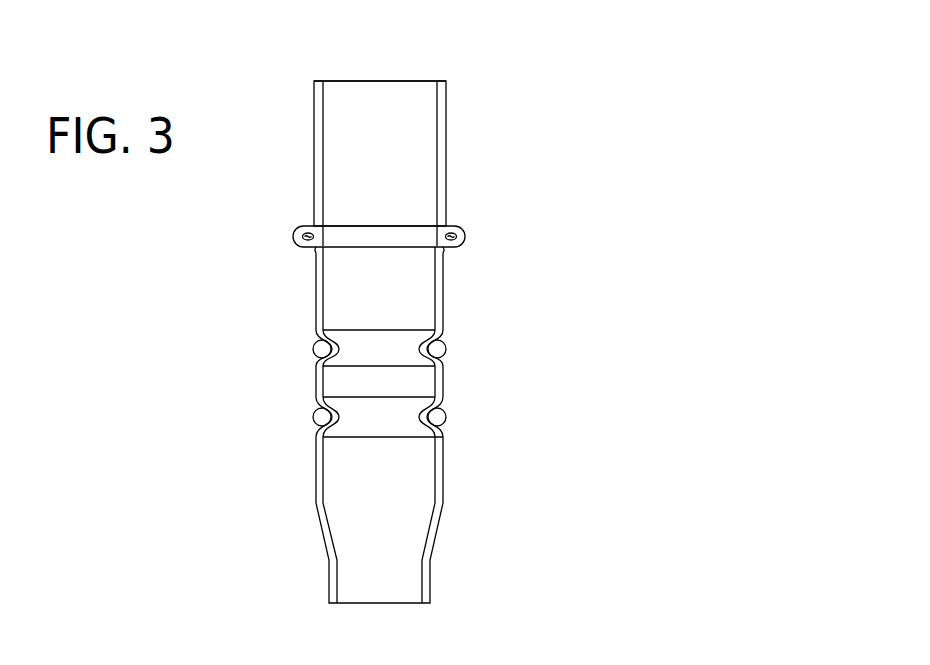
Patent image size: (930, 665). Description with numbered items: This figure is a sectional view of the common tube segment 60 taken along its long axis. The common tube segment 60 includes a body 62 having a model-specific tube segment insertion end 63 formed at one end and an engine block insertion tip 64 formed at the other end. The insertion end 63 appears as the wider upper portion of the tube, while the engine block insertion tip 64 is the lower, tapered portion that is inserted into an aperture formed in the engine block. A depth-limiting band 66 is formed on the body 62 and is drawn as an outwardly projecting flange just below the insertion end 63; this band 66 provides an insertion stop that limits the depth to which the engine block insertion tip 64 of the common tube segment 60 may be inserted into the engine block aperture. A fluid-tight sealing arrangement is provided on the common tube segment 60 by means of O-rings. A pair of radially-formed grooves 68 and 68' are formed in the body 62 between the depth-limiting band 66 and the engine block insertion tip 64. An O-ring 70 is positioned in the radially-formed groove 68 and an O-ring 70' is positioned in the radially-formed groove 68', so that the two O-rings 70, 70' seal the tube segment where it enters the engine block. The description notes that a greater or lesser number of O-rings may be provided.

The common tube segment 60 is at (441, 142).
The model-specific tube segment insertion end 63 is at (319, 97).
The depth-limiting band 66 is at (295, 236).
The body 62 is at (443, 285).
The radially-formed groove 68 is at (492, 358).
The radially-formed groove 68' is at (508, 434).
The O-ring 70 is at (270, 385).
The O-ring 70' is at (279, 473).
The engine block insertion tip 64 is at (427, 563).